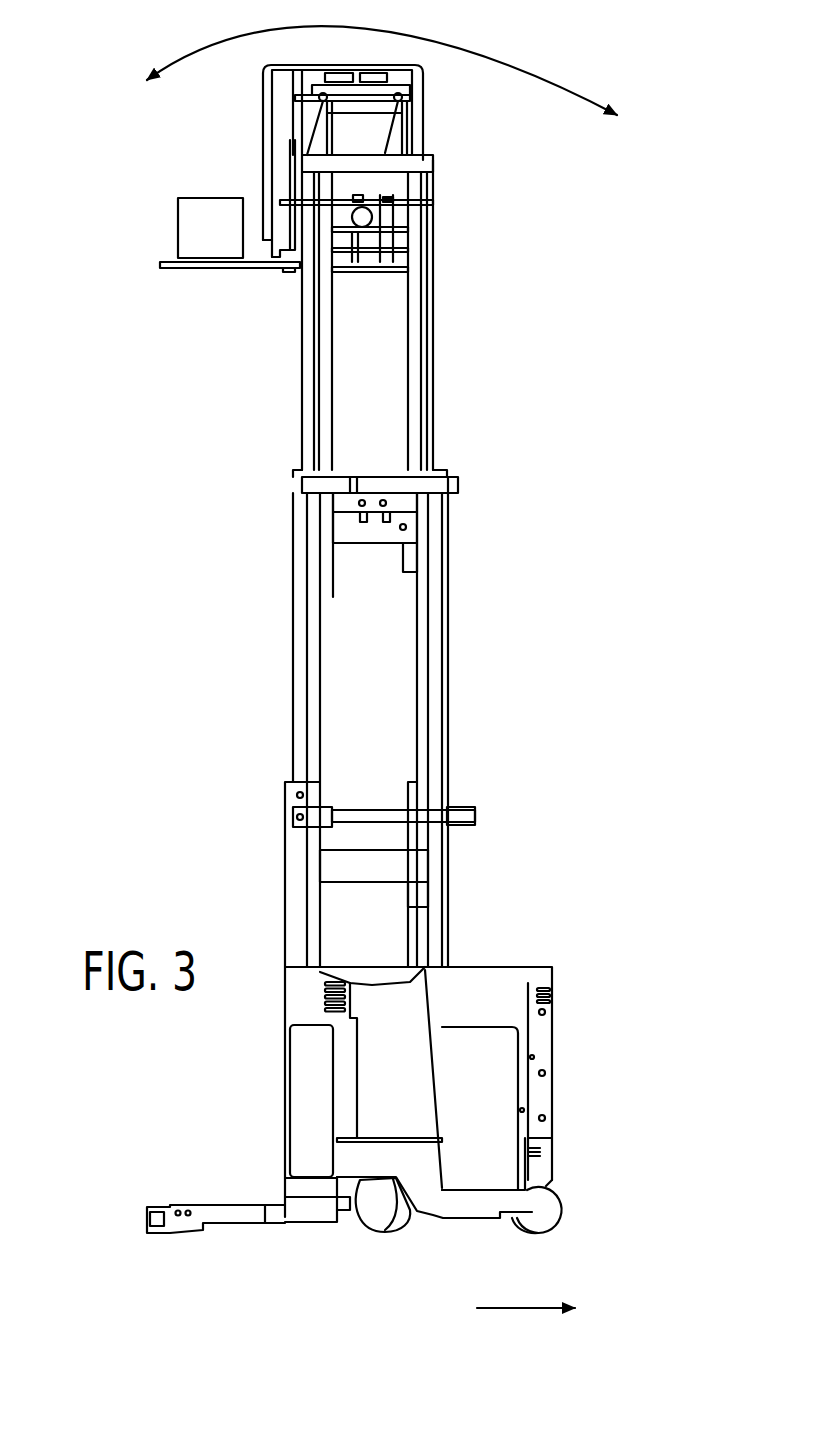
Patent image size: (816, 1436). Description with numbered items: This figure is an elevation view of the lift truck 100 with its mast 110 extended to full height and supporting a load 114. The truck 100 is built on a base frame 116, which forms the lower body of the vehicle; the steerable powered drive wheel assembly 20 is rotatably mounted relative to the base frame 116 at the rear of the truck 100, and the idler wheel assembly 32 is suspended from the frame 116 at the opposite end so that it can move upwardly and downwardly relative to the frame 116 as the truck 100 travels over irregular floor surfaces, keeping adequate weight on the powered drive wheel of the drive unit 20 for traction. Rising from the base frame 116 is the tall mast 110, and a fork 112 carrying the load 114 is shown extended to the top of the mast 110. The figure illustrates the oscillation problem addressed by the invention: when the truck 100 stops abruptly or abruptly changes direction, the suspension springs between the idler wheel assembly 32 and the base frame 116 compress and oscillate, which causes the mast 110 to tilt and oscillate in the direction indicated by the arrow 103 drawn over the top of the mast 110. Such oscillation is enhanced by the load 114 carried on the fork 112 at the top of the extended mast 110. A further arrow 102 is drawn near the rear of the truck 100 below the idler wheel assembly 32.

The truck 100 is at (580, 1065).
The arrow 103 is at (553, 70).
The mast 110 is at (435, 395).
The fork 112 is at (257, 268).
The load 114 is at (200, 232).
The base frame 116 is at (553, 1155).
The drive wheel assembly 20 is at (390, 1230).
The idler wheel assembly 32 is at (550, 1228).
The direction of travel arrow 102 is at (549, 1311).